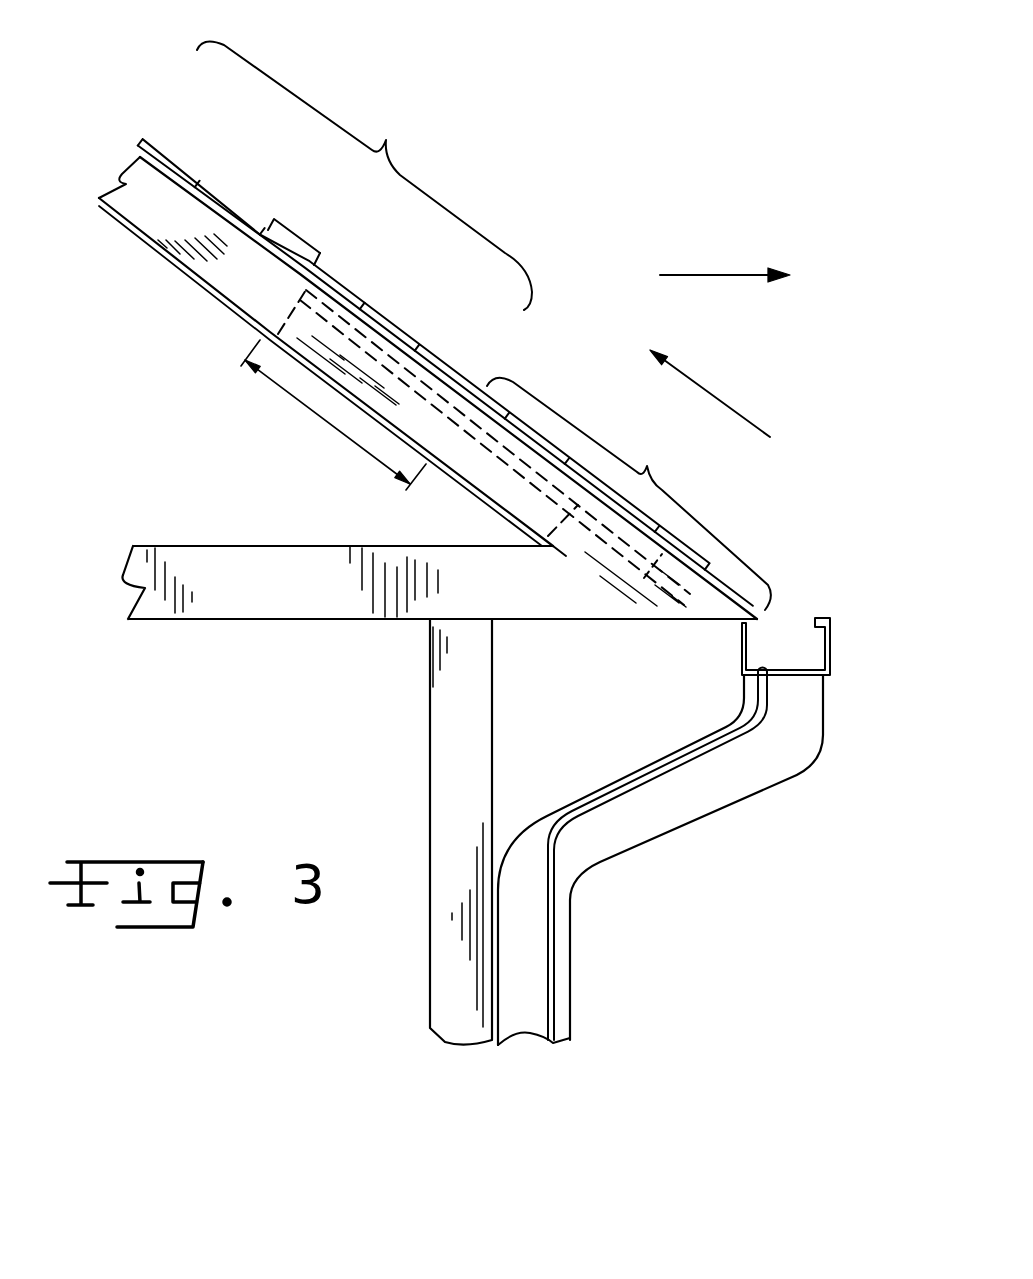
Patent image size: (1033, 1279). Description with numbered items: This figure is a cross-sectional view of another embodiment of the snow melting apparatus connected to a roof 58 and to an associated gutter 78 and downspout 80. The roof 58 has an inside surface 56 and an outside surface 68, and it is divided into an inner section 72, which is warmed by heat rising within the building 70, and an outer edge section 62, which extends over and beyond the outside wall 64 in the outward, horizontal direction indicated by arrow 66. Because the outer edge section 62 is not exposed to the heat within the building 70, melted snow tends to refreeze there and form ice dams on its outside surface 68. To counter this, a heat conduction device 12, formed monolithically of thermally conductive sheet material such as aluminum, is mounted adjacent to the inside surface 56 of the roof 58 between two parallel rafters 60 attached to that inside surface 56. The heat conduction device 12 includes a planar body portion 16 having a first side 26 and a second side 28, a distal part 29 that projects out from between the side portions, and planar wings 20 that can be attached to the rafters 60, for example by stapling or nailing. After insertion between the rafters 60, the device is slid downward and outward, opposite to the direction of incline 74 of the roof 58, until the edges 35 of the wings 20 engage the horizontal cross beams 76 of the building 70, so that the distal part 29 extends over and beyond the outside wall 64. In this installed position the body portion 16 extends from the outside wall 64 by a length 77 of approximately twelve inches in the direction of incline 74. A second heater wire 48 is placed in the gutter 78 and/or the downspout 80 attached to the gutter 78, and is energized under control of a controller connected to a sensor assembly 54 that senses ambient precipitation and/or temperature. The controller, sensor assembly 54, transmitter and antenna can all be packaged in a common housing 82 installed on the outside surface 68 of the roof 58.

The heat conduction device 12 is at (287, 306).
The planar body portion 16 is at (388, 355).
The planar wings 20 is at (443, 468).
The first side 26 is at (352, 315).
The second side 28 is at (497, 445).
The distal part 29 is at (653, 563).
The edge 35 is at (549, 546).
The second heater wire 48 is at (624, 786).
The sensor assembly 54 is at (318, 248).
The inside surface 56 is at (268, 245).
The roof 58 is at (210, 183).
The rafters 60 is at (138, 218).
The outer edge section 62 is at (629, 494).
The outside wall 64 is at (440, 723).
The arrow 66 is at (732, 270).
The outside surface 68 is at (190, 172).
The building 70 is at (322, 728).
The inner section 72 is at (364, 175).
The direction of incline 74 is at (704, 388).
The horizontal cross beams 76 is at (258, 609).
The length 77 is at (330, 423).
The gutter 78 is at (836, 641).
The downspout 80 is at (715, 808).
The common housing 82 is at (280, 221).